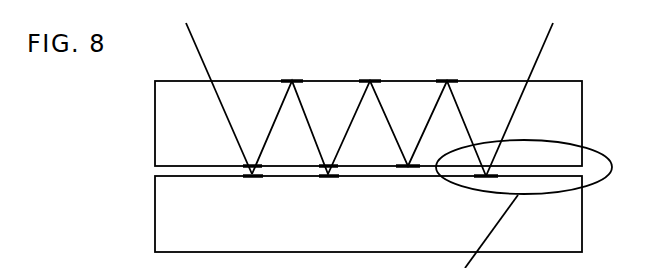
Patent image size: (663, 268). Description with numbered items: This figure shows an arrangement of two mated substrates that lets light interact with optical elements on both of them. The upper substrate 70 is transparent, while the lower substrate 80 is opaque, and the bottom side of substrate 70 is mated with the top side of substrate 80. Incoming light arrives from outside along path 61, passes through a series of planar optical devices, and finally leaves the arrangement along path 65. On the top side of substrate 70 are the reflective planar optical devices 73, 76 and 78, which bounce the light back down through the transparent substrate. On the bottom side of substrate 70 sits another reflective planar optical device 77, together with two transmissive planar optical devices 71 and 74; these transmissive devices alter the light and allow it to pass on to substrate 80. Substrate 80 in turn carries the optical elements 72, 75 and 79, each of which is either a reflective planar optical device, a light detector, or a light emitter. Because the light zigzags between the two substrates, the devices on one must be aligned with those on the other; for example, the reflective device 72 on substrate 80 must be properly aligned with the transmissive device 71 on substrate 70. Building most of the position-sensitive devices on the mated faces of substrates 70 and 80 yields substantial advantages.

The incoming light path 61 is at (198, 43).
The exit light path 65 is at (534, 64).
The transparent substrate 70 is at (584, 123).
The opaque substrate 80 is at (583, 233).
The transmissive planar optical device 71 is at (246, 164).
The reflective device 72 is at (249, 178).
The reflective planar optical device 73 is at (293, 81).
The transmissive planar optical device 74 is at (322, 164).
The optical element 75 is at (325, 178).
The reflective planar optical device 76 is at (371, 81).
The reflective planar optical device 77 is at (404, 165).
The reflective planar optical device 78 is at (448, 81).
The optical element 79 is at (484, 178).